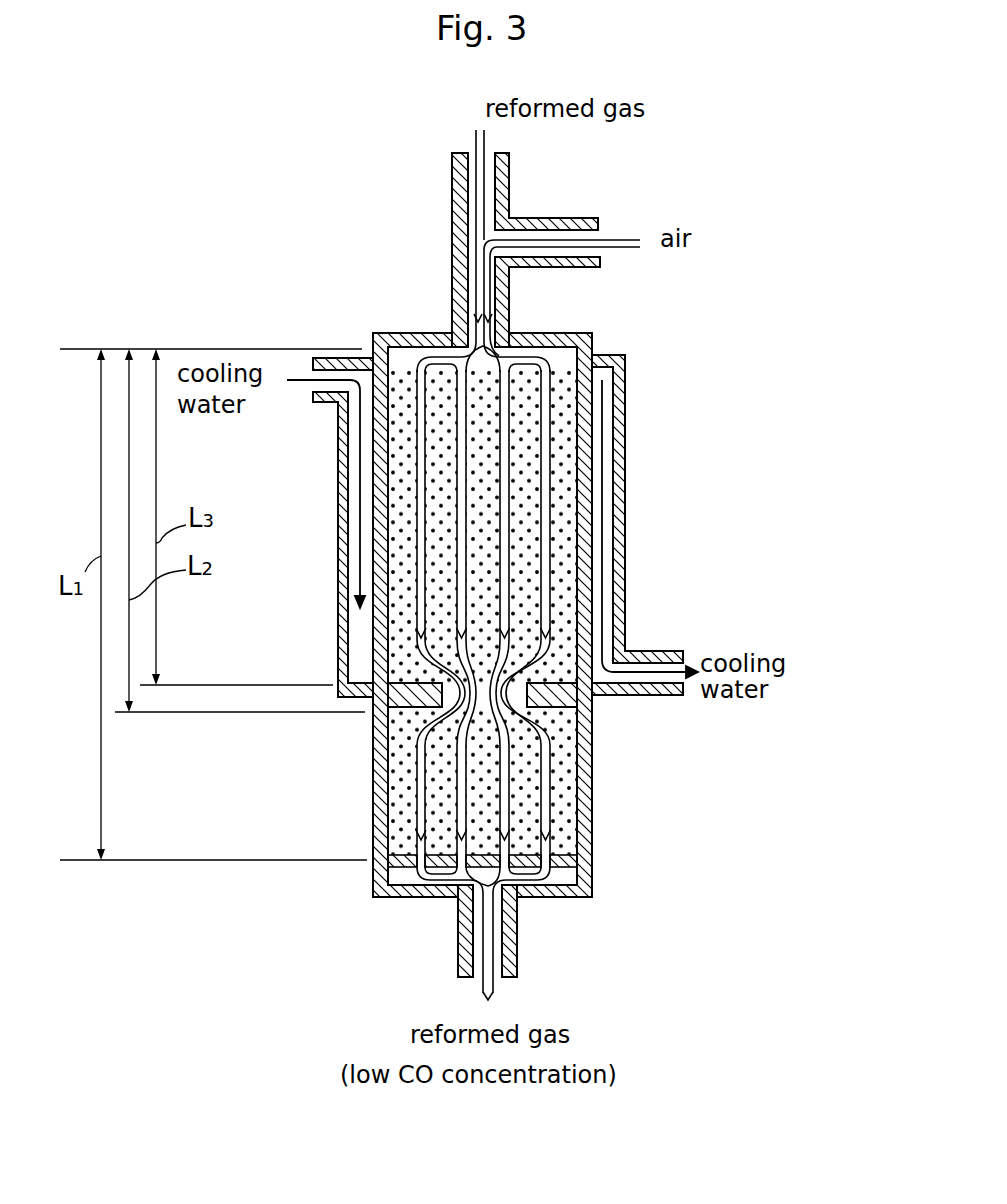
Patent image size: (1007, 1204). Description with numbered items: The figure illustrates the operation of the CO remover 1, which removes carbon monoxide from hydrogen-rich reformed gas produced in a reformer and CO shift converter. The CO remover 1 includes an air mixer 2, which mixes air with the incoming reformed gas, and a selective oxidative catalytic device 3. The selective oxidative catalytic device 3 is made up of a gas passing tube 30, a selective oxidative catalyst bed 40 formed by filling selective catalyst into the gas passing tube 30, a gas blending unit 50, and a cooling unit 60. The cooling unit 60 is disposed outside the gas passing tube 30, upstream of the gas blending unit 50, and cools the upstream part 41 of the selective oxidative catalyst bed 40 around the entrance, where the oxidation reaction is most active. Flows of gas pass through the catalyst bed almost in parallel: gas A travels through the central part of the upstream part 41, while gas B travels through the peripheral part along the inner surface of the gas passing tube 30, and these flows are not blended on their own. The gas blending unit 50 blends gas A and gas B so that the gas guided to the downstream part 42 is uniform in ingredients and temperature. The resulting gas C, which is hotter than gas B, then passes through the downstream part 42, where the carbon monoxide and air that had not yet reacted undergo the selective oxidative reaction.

The CO remover 1 is at (780, 246).
The air mixer 2 is at (448, 247).
The selective oxidative catalytic device 3 is at (656, 374).
The gas passing tube 30 is at (585, 860).
The selective oxidative catalyst bed 40 is at (843, 583).
The upstream part 41 is at (558, 544).
The downstream part 42 is at (571, 763).
The gas blending unit 50 is at (400, 710).
The cooling unit 60 is at (338, 448).
The gas A is at (460, 487).
The gas B is at (412, 553).
The gas C is at (555, 805).